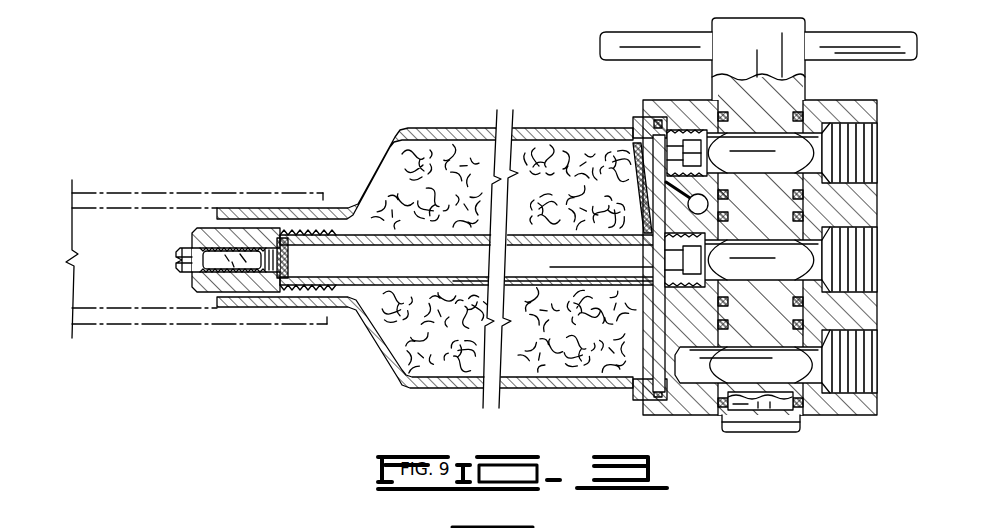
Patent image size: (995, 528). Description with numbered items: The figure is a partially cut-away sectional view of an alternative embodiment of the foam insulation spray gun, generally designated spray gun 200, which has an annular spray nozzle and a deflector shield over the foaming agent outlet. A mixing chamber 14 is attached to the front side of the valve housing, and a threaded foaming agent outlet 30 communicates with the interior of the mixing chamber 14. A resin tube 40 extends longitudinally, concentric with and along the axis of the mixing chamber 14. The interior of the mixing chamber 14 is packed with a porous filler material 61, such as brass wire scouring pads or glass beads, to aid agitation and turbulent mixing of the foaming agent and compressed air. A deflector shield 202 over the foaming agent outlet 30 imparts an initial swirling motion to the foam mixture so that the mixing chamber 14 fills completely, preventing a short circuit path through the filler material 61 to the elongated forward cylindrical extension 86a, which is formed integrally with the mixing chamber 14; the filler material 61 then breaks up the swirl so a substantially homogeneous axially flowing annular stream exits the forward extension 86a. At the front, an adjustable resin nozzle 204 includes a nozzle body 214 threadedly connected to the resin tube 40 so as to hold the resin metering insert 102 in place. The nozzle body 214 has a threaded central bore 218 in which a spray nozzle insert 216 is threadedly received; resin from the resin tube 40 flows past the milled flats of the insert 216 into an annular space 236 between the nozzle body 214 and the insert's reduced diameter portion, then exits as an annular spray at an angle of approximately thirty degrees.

The spray gun 200 is at (491, 237).
The elongated forward cylindrical extension 86a is at (277, 210).
The porous filler material 61 is at (413, 353).
The deflector shield 202 is at (627, 182).
The adjustable resin nozzle 204 is at (249, 297).
The annular space 236 is at (193, 243).
The threaded central bore 218 is at (216, 246).
The spray nozzle insert 216 is at (232, 262).
The nozzle body 214 is at (201, 287).
The resin metering insert 102 is at (283, 281).
The mixing chamber 14 is at (552, 389).
The foaming agent outlet 30 is at (653, 172).
The resin tube 40 is at (608, 257).